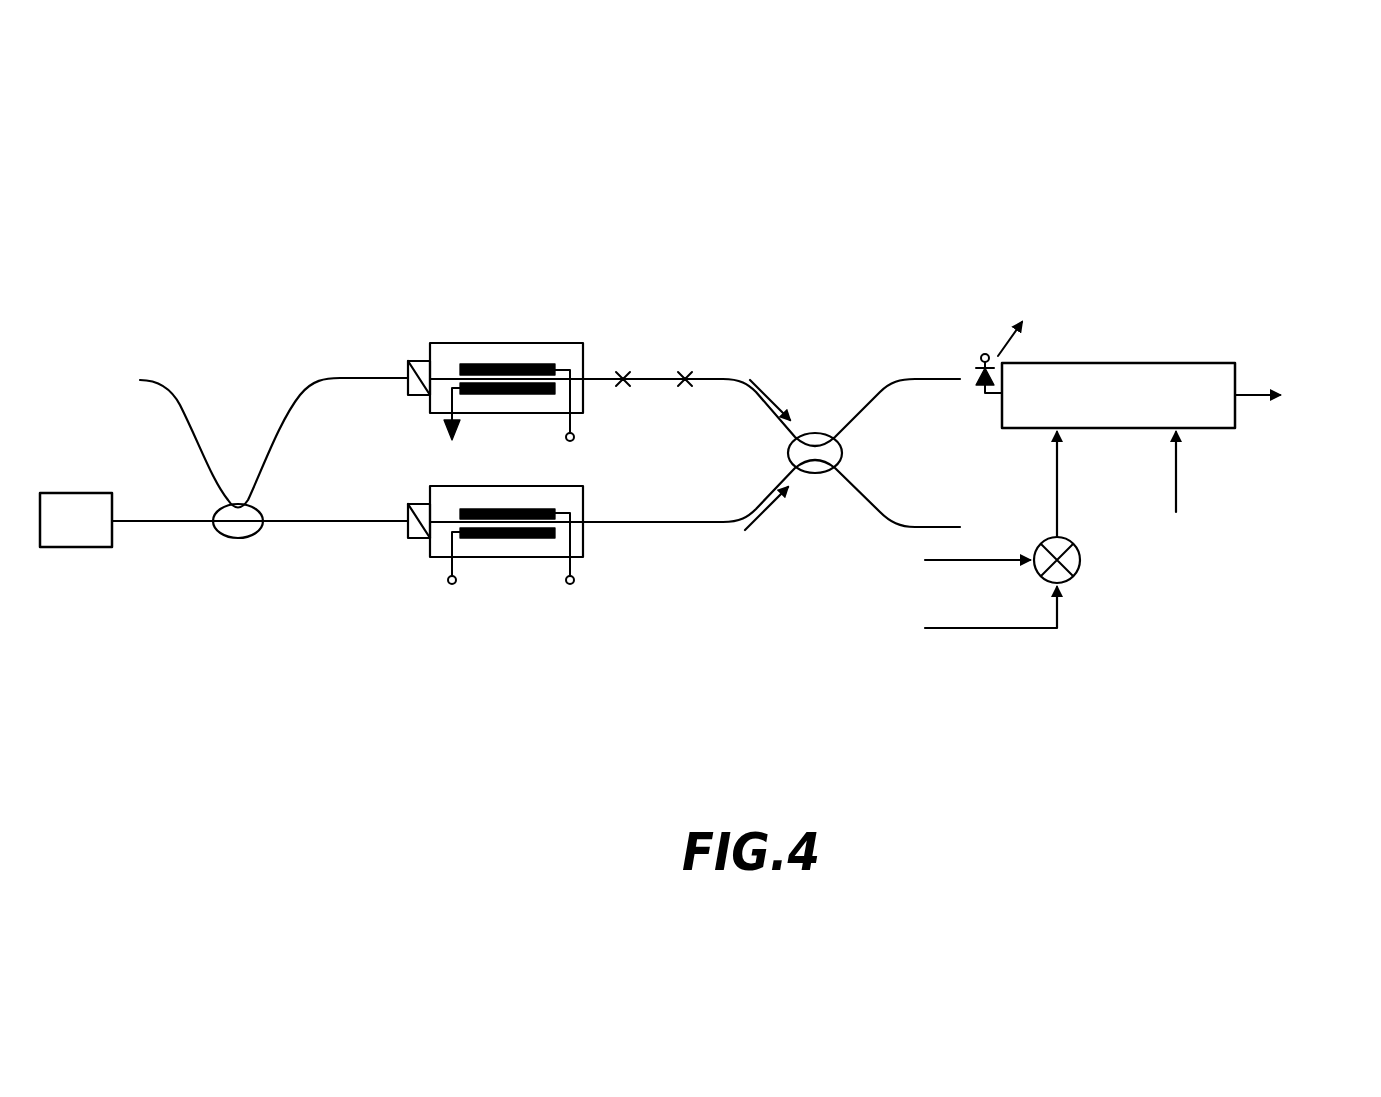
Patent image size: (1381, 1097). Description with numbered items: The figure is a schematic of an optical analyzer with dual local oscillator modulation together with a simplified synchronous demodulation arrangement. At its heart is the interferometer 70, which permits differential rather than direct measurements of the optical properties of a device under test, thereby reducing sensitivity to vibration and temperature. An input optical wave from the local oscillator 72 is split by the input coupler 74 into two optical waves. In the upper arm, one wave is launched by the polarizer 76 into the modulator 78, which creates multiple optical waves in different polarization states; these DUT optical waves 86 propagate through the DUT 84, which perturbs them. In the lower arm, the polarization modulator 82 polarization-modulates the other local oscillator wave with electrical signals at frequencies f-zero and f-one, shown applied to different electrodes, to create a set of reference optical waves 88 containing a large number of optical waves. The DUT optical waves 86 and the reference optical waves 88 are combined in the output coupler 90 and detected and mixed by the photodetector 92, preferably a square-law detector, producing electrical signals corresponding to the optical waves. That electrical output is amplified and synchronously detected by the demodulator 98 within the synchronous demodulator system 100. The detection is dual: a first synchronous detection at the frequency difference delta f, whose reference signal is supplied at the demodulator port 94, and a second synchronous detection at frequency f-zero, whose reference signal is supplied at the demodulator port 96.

The interferometer 70 is at (708, 272).
The local oscillator 72 is at (62, 548).
The input coupler 74 is at (240, 540).
The polarizer 76 is at (408, 385).
The modulator 78 is at (447, 343).
The polarization modulator 82 is at (585, 500).
The DUT 84 is at (660, 342).
The DUT optical waves 86 is at (772, 400).
The reference optical waves 88 is at (760, 520).
The output coupler 90 is at (813, 473).
The photodetector 92 is at (978, 380).
The demodulator port 94 is at (1057, 432).
The demodulator port 96 is at (1178, 432).
The demodulator 98 is at (1103, 363).
The synchronous demodulator system 100 is at (1240, 443).